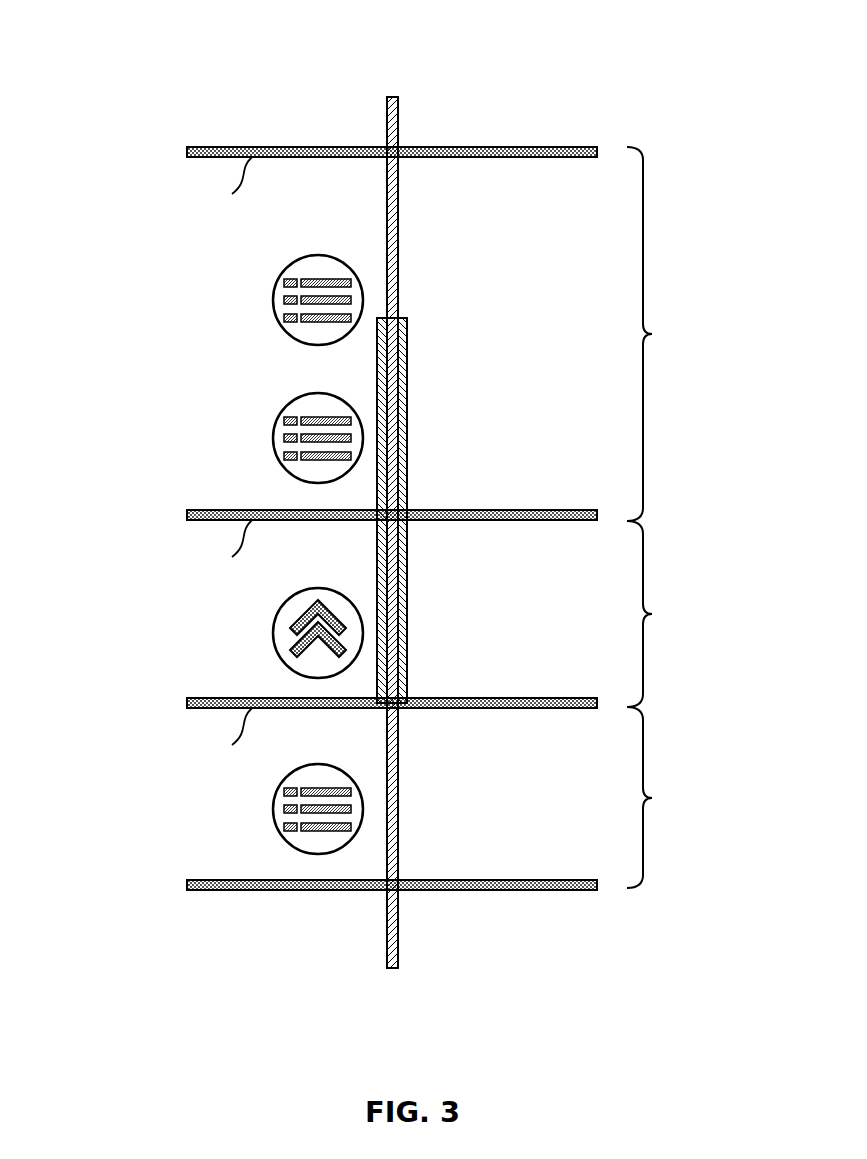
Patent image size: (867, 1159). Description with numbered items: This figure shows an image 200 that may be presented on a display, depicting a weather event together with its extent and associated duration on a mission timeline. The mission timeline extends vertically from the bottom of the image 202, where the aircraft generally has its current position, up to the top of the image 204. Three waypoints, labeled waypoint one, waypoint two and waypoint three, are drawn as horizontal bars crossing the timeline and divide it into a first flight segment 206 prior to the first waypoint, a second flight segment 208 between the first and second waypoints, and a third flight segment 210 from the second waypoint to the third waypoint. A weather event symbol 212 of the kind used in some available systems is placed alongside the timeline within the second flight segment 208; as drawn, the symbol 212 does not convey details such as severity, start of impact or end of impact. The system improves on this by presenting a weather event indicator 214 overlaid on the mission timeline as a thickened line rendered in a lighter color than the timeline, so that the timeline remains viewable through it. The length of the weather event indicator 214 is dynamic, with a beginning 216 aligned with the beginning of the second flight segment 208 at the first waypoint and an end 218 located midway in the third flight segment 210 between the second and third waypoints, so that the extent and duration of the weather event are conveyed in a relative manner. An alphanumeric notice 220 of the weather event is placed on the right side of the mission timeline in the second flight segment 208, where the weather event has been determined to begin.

The image 200 is at (157, 63).
The bottom of the mission timeline 202 is at (392, 968).
The top of the mission timeline 204 is at (394, 97).
The first flight segment 206 is at (668, 797).
The second flight segment 208 is at (668, 614).
The third flight segment 210 is at (667, 334).
The weather event symbol 212 is at (272, 623).
The weather event indicator 214 is at (385, 354).
The beginning of the weather event indicator 216 is at (403, 708).
The end of the weather event indicator 218 is at (403, 318).
The alphanumeric notice 220 is at (590, 635).